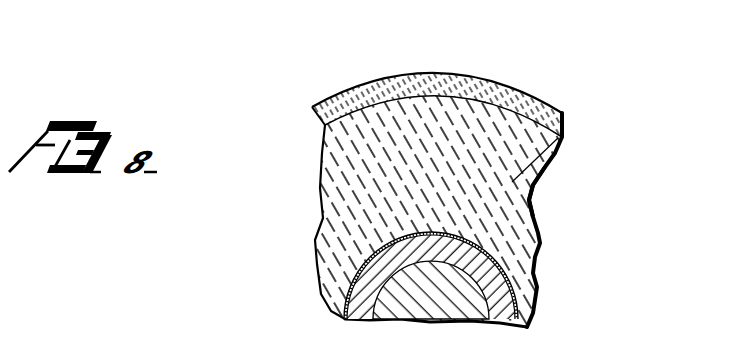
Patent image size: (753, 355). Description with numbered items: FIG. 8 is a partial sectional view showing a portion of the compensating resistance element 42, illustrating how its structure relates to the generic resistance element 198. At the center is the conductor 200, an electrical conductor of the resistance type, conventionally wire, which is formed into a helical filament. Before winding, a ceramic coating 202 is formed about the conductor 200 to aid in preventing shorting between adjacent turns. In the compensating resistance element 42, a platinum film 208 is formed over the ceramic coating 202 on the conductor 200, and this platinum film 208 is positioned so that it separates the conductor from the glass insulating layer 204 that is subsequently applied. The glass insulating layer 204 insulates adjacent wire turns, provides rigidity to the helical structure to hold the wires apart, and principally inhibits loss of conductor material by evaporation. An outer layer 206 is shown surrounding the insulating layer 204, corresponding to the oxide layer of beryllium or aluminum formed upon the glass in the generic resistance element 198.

The resistance element 198 is at (570, 95).
The outer wear-resistant layer 206 is at (382, 98).
The insulating layer 204 is at (553, 163).
The compensating resistance element 42 is at (549, 200).
The platinum film 208 is at (506, 266).
The ceramic coating 202 is at (498, 302).
The conductor 200 is at (403, 281).